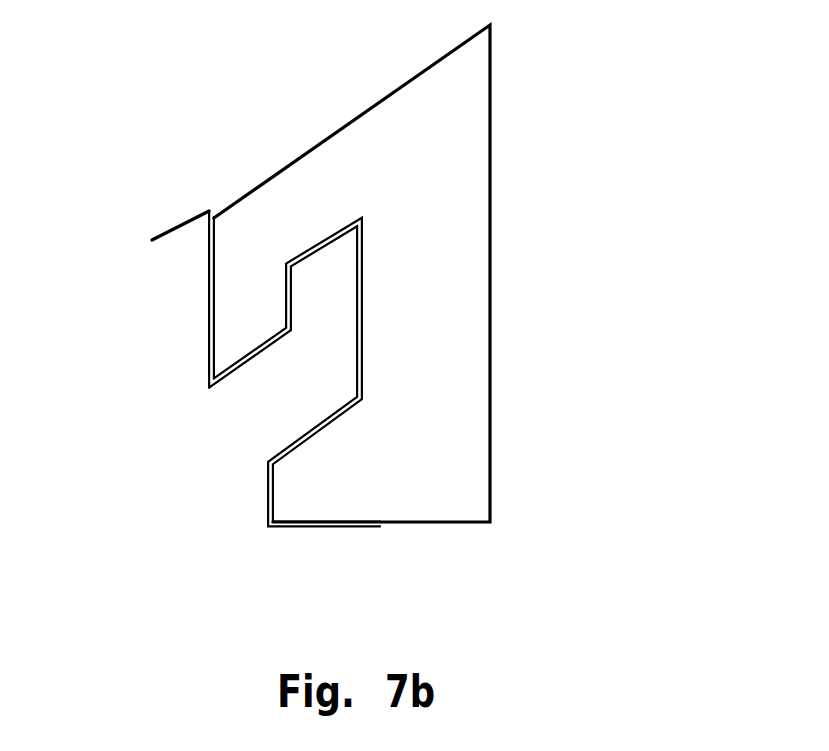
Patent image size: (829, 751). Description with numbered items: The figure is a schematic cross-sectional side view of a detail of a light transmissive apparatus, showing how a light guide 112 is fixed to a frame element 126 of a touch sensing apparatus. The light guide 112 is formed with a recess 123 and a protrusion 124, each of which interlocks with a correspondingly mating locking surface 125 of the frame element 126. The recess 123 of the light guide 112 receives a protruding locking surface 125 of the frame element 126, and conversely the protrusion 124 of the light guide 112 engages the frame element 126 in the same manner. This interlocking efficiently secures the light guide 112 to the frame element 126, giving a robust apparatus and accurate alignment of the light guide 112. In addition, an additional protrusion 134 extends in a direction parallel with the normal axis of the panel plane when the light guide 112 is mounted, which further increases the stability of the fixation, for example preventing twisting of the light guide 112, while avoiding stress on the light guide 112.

The light guide 112 is at (140, 94).
The recess 123 is at (336, 298).
The protrusion 124 is at (333, 493).
The locking surface 125 is at (270, 345).
The frame element 126 is at (167, 228).
The additional protrusion 134 is at (232, 332).